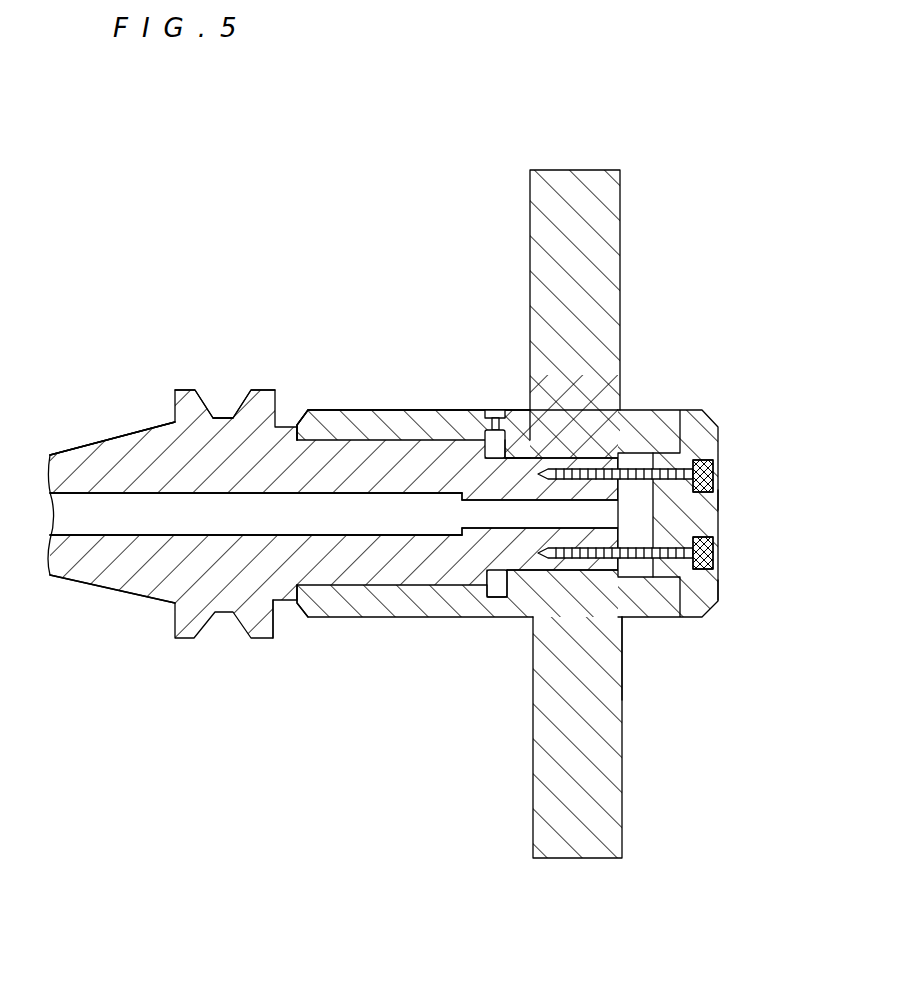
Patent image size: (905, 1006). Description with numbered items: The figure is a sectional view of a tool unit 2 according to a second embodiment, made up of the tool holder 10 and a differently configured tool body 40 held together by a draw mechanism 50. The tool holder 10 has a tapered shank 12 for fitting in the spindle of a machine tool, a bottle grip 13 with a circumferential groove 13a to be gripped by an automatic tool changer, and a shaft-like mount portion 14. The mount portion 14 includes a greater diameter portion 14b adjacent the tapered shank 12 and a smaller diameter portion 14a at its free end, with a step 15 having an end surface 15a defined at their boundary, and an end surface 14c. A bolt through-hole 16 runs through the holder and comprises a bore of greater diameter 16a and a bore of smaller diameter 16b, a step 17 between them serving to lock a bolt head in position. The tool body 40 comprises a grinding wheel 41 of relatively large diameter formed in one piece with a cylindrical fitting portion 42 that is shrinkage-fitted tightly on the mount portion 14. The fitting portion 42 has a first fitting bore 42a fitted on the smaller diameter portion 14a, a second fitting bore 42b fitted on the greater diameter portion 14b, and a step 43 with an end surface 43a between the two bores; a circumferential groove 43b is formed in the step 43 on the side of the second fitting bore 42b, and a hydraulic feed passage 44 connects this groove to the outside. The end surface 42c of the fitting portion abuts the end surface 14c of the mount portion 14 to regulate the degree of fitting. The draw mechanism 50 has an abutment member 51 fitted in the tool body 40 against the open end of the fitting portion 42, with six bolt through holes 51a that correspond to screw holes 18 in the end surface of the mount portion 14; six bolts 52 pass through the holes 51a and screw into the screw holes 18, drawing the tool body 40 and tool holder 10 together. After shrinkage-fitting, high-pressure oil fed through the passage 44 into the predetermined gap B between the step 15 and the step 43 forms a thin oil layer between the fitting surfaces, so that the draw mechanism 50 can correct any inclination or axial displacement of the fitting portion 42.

The tool unit 2 is at (384, 182).
The tool holder 10 is at (91, 438).
The tapered shank 12 is at (138, 447).
The bottle grip 13 is at (186, 412).
The circumferential groove 13a is at (222, 417).
The mount portion 14 is at (376, 454).
The smaller diameter portion 14a is at (623, 619).
The greater diameter portion 14b is at (418, 452).
The end surface 14c is at (300, 432).
The step 15 is at (478, 574).
The end surface 15a is at (522, 432).
The bolt through-hole 16 is at (97, 514).
The bore of greater diameter 16a is at (170, 535).
The bore of smaller diameter 16b is at (480, 521).
The step 17 is at (464, 486).
The screw holes 18 is at (517, 452).
The tool body 40 is at (522, 272).
The grinding wheel 41 is at (606, 768).
The cylindrical fitting portion 42 is at (345, 419).
The first fitting bore 42a is at (625, 658).
The second fitting bore 42b is at (307, 590).
The end surface 42c is at (296, 589).
The step 43 is at (510, 442).
The end surface 43a is at (481, 592).
The circumferential groove 43b is at (492, 599).
The hydraulic feed passage 44 is at (505, 410).
The draw mechanism 50 is at (709, 409).
The abutment member 51 is at (718, 427).
The bolt through holes 51a is at (718, 506).
The bolts 52 is at (714, 468).
The gap B is at (508, 600).